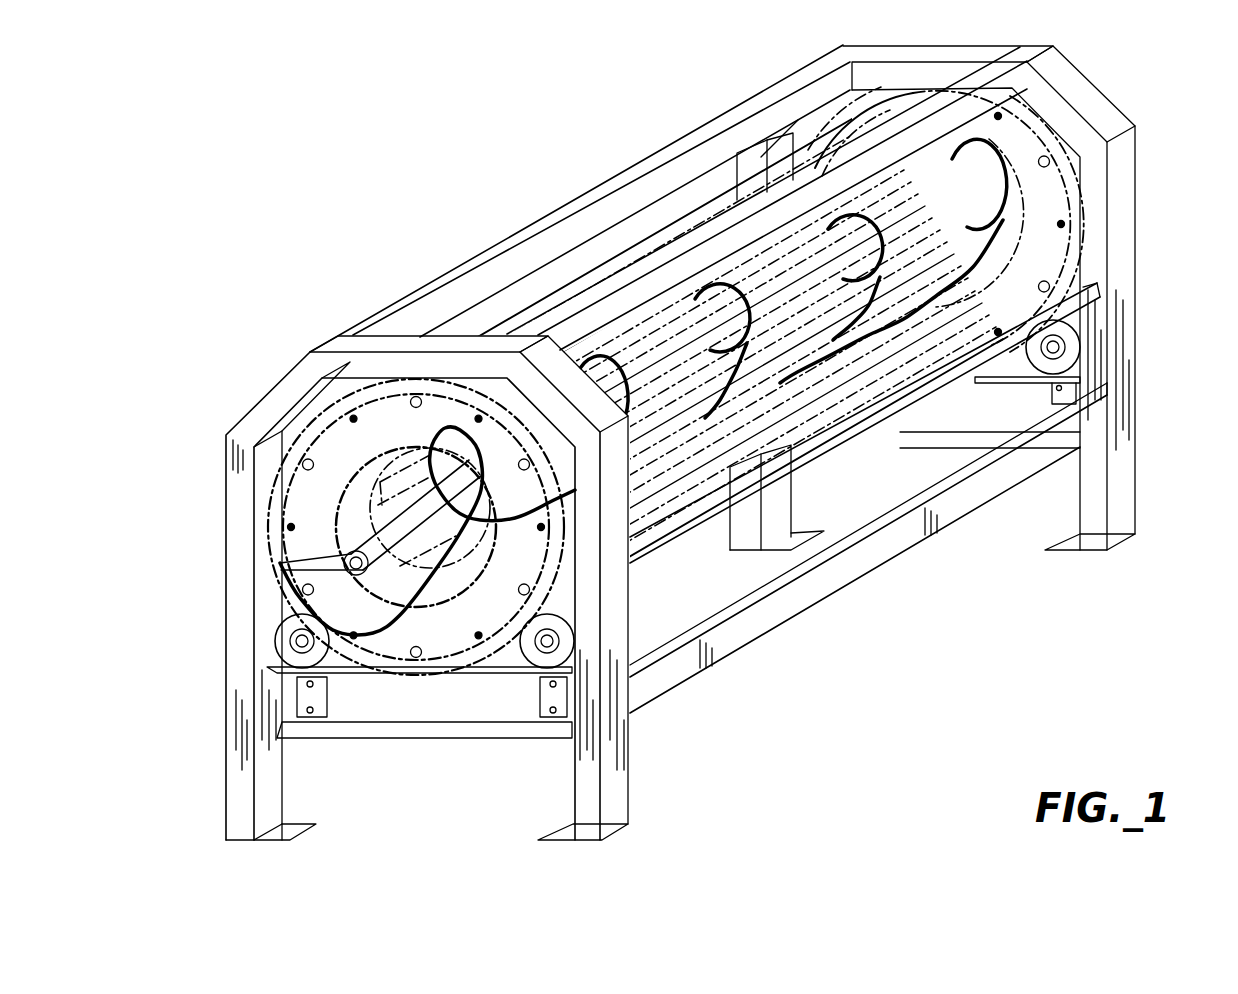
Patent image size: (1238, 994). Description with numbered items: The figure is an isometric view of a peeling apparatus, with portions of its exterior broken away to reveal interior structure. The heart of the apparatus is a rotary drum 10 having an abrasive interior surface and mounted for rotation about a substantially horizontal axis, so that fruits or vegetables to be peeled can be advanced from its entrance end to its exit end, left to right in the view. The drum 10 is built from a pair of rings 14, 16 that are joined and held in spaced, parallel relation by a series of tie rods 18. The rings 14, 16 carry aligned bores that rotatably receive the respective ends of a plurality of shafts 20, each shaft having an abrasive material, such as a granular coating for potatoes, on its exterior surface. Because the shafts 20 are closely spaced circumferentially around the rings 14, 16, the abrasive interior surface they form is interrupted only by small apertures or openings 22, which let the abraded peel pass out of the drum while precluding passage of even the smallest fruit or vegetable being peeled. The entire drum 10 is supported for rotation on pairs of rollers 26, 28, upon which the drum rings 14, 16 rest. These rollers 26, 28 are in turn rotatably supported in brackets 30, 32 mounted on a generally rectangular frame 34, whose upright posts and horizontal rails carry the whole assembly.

The rotary drum 10 is at (818, 420).
The ring 14 is at (999, 212).
The ring 16 is at (292, 405).
The tie rods 18 is at (1083, 247).
The shafts 20 is at (1090, 292).
The apertures 22 is at (1070, 195).
The rollers 26 is at (522, 650).
The rollers 28 is at (318, 650).
The brackets 30 is at (543, 703).
The brackets 32 is at (297, 695).
The frame 34 is at (1127, 513).